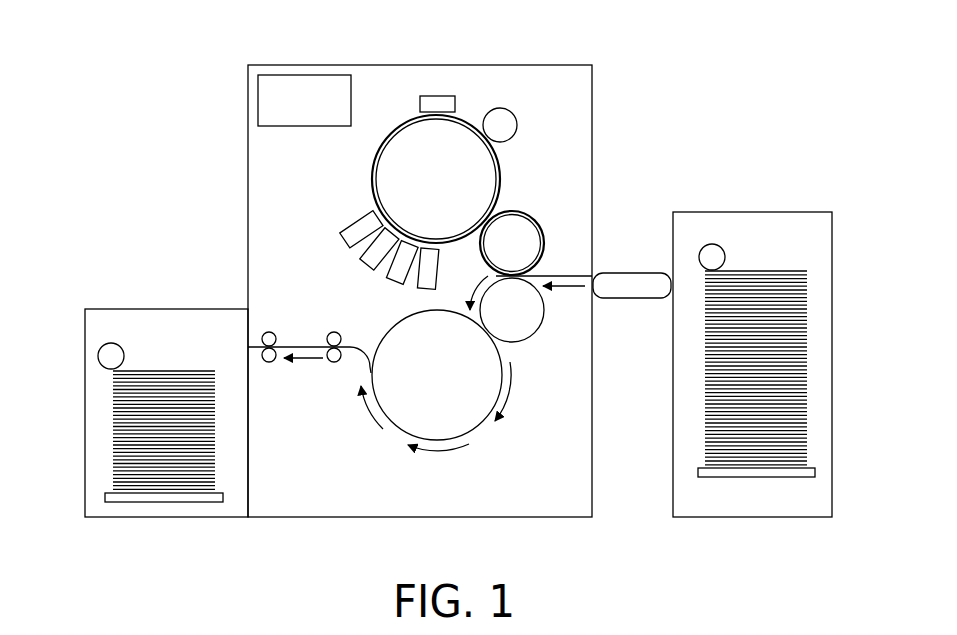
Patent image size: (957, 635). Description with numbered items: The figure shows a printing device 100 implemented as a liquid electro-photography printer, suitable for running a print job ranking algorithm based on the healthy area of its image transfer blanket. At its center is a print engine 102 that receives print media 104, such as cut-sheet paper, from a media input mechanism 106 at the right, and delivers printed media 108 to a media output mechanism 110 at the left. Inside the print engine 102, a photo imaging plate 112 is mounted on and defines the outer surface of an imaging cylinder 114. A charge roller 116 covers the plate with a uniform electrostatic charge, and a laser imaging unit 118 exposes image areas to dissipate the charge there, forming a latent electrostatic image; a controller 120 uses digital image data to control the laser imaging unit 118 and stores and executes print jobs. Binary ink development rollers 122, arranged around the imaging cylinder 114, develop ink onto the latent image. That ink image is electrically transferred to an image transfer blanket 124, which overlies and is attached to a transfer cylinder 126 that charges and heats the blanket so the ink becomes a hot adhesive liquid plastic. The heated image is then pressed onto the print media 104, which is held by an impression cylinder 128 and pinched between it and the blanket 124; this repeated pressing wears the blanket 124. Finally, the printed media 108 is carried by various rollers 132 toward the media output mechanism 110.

The printing device 100 is at (178, 31).
The print engine 102 is at (527, 64).
The print media 104 is at (570, 275).
The media input mechanism 106 is at (782, 211).
The printed media 108 is at (310, 347).
The media output mechanism 110 is at (127, 308).
The photo imaging plate 112 is at (372, 170).
The imaging cylinder 114 is at (453, 191).
The charge roller 116 is at (515, 115).
The laser imaging unit 118 is at (448, 96).
The controller 120 is at (321, 113).
The binary ink development rollers 122 is at (432, 300).
The image transfer blanket 124 is at (532, 221).
The transfer cylinder 126 is at (529, 255).
The impression cylinder 128 is at (529, 322).
The rollers 132 is at (454, 387).